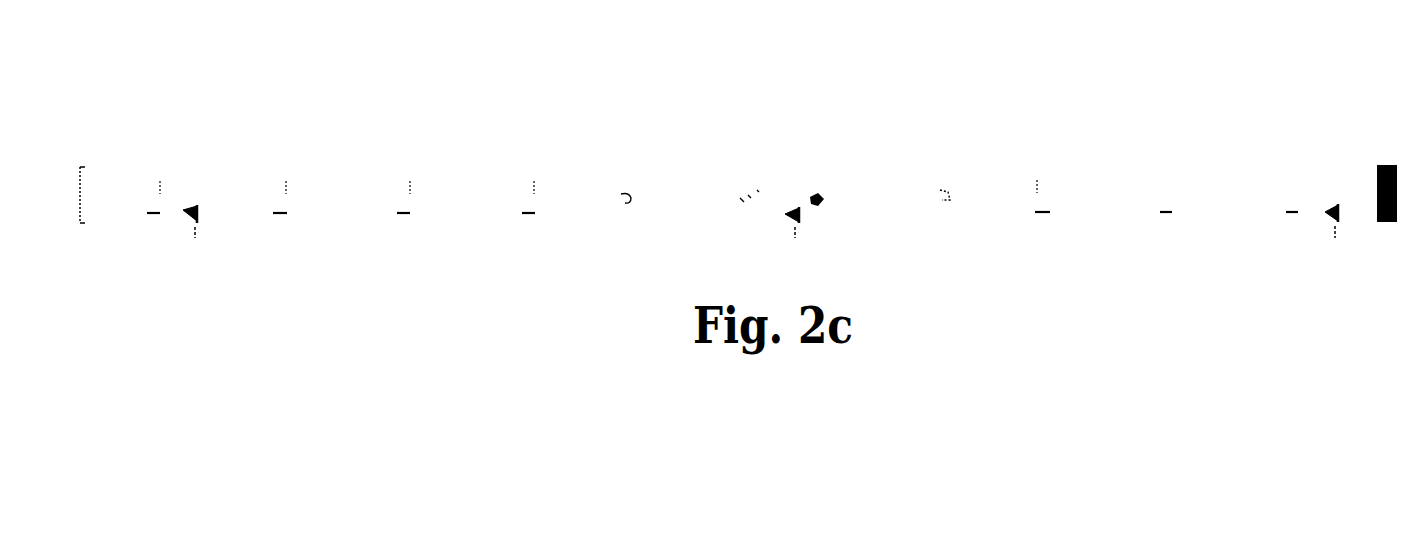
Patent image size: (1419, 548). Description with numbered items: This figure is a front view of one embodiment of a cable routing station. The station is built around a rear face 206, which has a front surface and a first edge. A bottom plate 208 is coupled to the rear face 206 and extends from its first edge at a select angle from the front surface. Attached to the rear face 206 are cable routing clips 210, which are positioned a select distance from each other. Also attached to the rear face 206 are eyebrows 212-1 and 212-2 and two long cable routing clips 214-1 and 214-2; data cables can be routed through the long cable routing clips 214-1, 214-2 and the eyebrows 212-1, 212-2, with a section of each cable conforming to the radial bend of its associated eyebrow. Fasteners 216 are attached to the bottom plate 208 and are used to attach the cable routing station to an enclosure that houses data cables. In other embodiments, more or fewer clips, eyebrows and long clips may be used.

The rear face 206 is at (1337, 173).
The bottom plate 208 is at (487, 232).
The cable routing clips 210 is at (520, 193).
The eyebrow 212-1 is at (825, 192).
The eyebrow 212-2 is at (731, 213).
The long cable routing clip 214-1 is at (901, 173).
The long cable routing clip 214-2 is at (655, 175).
The fasteners 216 is at (188, 212).